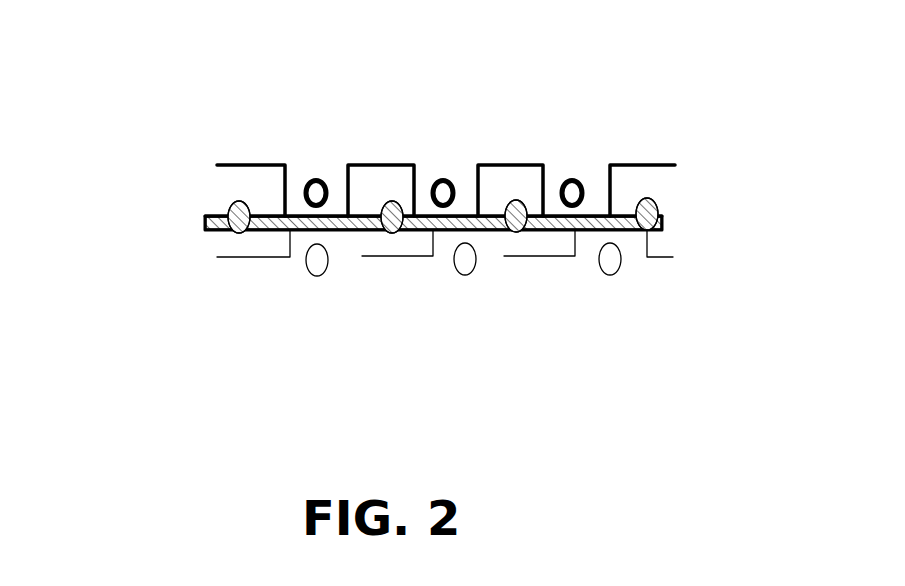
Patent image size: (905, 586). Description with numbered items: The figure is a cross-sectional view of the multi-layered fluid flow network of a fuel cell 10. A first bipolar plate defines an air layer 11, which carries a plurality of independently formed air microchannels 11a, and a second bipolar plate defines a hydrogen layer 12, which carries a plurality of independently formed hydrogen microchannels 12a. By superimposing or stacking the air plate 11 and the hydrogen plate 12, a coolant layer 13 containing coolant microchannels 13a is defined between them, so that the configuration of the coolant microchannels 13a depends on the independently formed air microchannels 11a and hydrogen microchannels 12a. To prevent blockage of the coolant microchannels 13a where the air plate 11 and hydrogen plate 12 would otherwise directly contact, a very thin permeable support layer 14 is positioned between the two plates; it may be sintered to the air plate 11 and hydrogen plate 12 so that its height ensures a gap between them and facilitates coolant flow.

The fuel cell 10 is at (114, 137).
The air layer 11 is at (675, 165).
The air microchannels 11a is at (447, 178).
The hydrogen layer 12 is at (673, 257).
The hydrogen microchannels 12a is at (307, 265).
The coolant layer 13 is at (542, 232).
The coolant microchannels 13a is at (248, 208).
The permeable support layer 14 is at (205, 217).